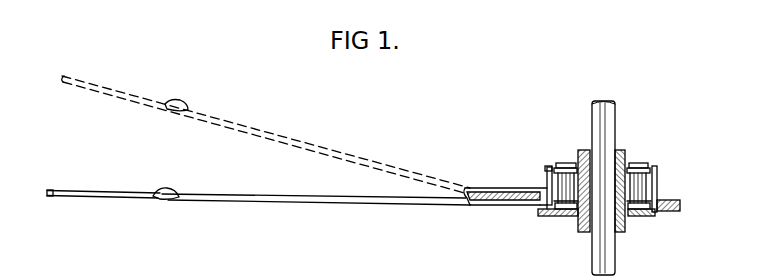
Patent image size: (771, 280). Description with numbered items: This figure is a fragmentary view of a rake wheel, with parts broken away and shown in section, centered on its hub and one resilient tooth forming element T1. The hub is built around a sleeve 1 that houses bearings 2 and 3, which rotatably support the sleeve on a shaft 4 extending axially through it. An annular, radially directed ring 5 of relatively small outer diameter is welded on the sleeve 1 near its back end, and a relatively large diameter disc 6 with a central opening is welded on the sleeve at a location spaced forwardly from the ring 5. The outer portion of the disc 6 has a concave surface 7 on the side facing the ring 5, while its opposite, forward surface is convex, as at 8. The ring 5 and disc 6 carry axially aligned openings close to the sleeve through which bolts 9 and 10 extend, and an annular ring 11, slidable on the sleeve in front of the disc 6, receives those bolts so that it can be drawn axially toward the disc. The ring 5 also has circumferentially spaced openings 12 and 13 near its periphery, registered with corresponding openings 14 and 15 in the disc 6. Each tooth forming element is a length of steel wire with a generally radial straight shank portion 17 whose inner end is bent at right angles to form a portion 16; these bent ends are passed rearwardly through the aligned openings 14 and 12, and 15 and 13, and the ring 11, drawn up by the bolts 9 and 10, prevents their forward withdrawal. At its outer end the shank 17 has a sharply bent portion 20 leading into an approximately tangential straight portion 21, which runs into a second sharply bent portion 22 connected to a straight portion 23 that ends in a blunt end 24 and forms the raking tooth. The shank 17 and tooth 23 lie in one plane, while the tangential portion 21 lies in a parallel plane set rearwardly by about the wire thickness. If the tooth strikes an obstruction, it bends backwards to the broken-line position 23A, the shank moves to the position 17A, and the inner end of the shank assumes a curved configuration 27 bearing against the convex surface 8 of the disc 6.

The sleeve 1 is at (634, 164).
The bearing 2 is at (618, 233).
The bearing 3 is at (620, 152).
The shaft 4 is at (590, 265).
The ring 5 is at (660, 172).
The disc 6 is at (508, 188).
The concave surface 7 is at (485, 187).
The convex surface 8 is at (483, 205).
The bolt 9 is at (558, 215).
The bolt 10 is at (636, 218).
The annular ring 11 is at (538, 209).
The opening 12 is at (548, 166).
The opening 13 is at (657, 168).
The opening 14 is at (548, 190).
The opening 15 is at (672, 201).
The bent inner end portion 16 is at (556, 165).
The shank portion 17 is at (256, 193).
The deflected shank position 17A is at (227, 120).
The sharply bent portion 20 is at (157, 193).
The straight tangential portion 21 is at (167, 188).
The sharply bent portion 22 is at (178, 191).
The tooth portion 23 is at (90, 190).
The deflected tooth position 23A is at (128, 94).
The blunt end 24 is at (48, 190).
The curved shank configuration 27 is at (470, 201).
The tooth forming element T1 is at (204, 208).